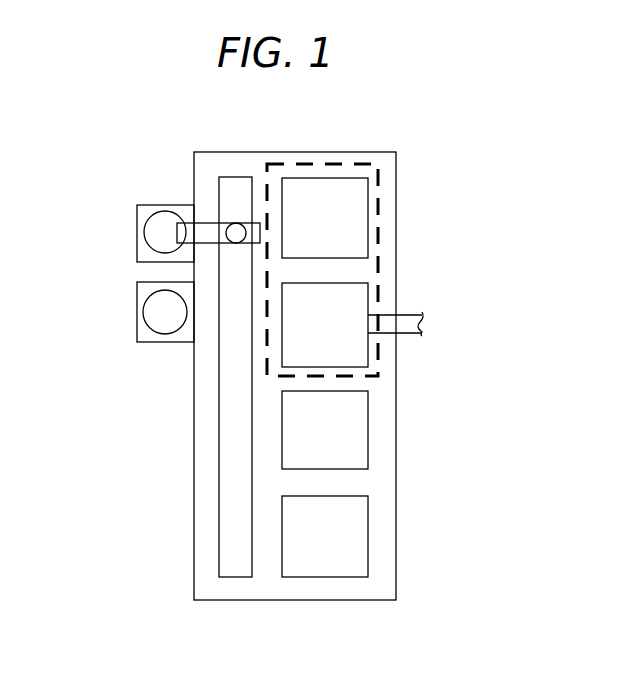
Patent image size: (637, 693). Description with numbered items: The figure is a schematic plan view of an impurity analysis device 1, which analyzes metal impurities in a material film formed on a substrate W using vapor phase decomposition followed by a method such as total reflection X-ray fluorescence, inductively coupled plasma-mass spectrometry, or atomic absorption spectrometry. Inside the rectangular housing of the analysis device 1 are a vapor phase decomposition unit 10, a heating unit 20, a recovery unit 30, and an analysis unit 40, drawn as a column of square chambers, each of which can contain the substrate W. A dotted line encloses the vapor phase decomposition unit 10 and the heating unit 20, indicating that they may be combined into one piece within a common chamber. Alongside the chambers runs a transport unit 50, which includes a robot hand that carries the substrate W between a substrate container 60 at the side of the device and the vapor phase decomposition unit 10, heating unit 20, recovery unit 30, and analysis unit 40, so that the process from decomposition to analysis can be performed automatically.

The impurity analysis device 1 is at (100, 603).
The vapor phase decomposition unit 10 is at (352, 215).
The heating unit 20 is at (353, 297).
The recovery unit 30 is at (352, 430).
The analysis unit 40 is at (352, 535).
The transport unit 50 is at (255, 223).
The substrate container 60 is at (166, 205).
The substrate W is at (155, 232).